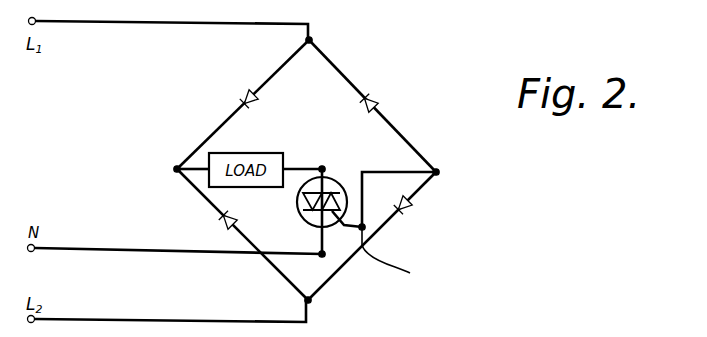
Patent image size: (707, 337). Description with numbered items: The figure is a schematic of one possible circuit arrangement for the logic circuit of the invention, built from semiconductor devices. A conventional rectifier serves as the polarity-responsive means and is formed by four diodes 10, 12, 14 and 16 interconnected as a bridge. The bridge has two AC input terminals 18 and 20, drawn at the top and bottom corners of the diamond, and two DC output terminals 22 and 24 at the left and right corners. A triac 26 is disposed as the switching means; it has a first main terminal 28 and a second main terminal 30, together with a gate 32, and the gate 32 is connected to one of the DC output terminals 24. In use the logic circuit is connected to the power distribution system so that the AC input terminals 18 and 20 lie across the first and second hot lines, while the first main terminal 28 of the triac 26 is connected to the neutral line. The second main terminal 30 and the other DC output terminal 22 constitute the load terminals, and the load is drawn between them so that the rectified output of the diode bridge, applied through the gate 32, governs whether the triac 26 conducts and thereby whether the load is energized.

The diode 10 is at (247, 92).
The diode 12 is at (392, 97).
The diode 14 is at (408, 207).
The diode 16 is at (222, 230).
The AC input terminal 18 is at (312, 40).
The AC input terminal 20 is at (310, 302).
The DC output terminal 22 is at (175, 168).
The DC output terminal 24 is at (439, 173).
The triac 26 is at (336, 180).
The first main terminal 28 is at (324, 256).
The second main terminal 30 is at (322, 166).
The gate 32 is at (396, 258).